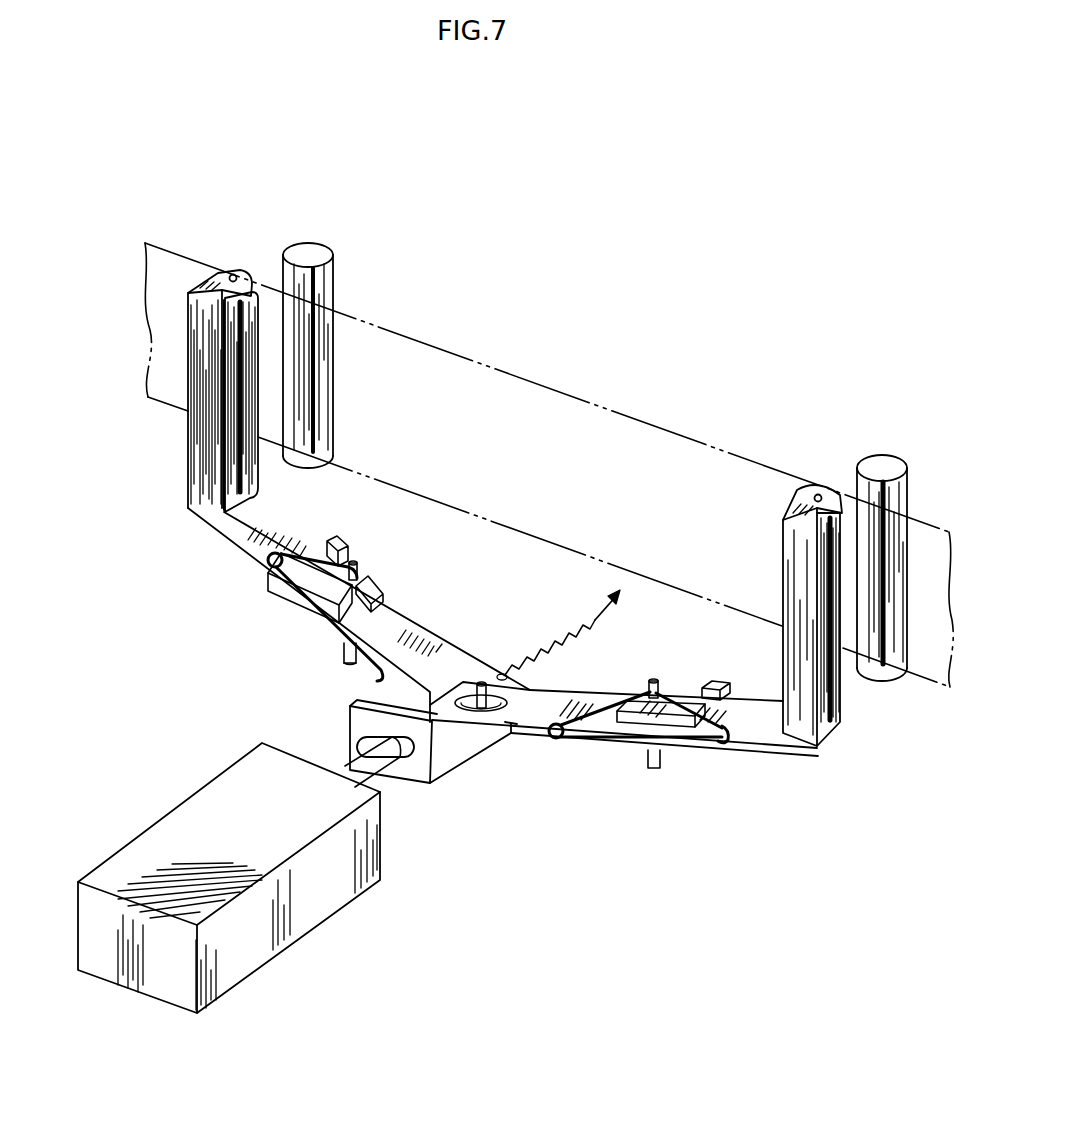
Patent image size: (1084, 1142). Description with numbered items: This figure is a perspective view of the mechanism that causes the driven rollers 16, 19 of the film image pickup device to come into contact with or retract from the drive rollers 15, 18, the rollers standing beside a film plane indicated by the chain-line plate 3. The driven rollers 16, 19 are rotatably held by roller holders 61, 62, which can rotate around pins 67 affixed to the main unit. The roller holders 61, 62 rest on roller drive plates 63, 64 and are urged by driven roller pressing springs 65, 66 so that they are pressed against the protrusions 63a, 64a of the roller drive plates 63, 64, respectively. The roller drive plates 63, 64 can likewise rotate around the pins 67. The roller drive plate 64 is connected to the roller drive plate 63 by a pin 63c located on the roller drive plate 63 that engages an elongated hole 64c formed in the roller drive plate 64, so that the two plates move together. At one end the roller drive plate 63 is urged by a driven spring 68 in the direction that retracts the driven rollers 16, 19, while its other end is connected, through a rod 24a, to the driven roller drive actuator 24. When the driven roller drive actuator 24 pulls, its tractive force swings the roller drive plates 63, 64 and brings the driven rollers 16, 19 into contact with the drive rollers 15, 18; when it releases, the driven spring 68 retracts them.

The substrate plate 3 is at (632, 442).
The drive roller 15 is at (318, 256).
The driven roller 16 is at (255, 325).
The drive roller 18 is at (880, 465).
The driven roller 19 is at (842, 685).
The driven roller drive actuator 24 is at (335, 892).
The drive rod 24a is at (380, 760).
The roller holder 61 is at (200, 463).
The roller holder 62 is at (800, 742).
The roller drive plate 63 is at (457, 750).
The protrusion 63a is at (340, 546).
The pin 63c is at (482, 682).
The roller drive plate 64 is at (545, 733).
The protrusion 64a is at (718, 684).
The elongated hole 64c is at (510, 735).
The driven roller pressing spring 65 is at (343, 641).
The driven roller pressing spring 66 is at (612, 718).
The pin 67 is at (355, 567).
The driven spring 68 is at (557, 629).